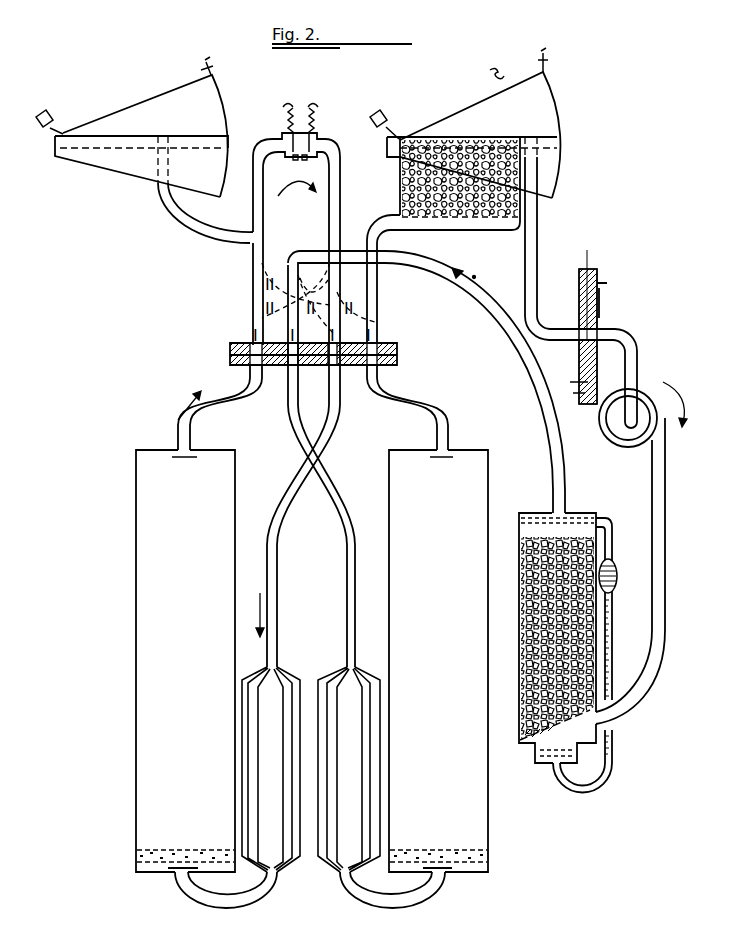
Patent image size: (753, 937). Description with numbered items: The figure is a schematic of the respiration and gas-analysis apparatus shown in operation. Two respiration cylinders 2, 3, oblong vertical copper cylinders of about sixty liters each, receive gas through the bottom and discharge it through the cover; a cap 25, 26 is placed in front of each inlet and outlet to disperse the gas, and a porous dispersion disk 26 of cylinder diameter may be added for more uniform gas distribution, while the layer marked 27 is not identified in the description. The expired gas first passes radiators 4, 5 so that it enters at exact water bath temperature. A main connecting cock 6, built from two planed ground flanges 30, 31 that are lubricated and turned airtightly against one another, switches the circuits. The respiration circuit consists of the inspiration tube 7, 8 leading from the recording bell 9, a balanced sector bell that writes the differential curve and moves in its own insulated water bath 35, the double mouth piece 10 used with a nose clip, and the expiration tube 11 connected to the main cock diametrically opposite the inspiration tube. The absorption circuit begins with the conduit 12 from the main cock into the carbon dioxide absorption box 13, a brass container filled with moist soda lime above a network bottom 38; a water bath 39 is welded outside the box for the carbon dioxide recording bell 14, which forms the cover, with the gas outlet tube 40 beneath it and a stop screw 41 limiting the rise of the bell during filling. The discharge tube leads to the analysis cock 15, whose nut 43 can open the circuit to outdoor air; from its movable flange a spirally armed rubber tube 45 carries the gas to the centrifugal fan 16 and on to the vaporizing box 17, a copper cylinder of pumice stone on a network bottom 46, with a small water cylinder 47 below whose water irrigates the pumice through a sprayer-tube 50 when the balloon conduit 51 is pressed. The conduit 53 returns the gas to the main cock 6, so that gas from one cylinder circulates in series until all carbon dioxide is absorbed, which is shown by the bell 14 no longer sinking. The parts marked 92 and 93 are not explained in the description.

The respiration cylinder 2 is at (185, 661).
The respiration cylinder 3 is at (438, 661).
The radiator 4 is at (300, 680).
The radiator 5 is at (328, 868).
The main connecting cock 6 is at (399, 353).
The inspiration tube 7 is at (258, 215).
The inspiration tube 8 is at (222, 238).
The recording bell 9 is at (132, 136).
The double mouth piece 10 is at (297, 107).
The expiration tube 11 is at (333, 229).
The absorption circuit conduit 12 is at (375, 284).
The carbon dioxide absorption box 13 is at (400, 182).
The carbon dioxide recording bell 14 is at (465, 135).
The analysis cock 15 is at (584, 319).
The centrifugal fan 16 is at (613, 440).
The vaporizing box 17 is at (519, 597).
The gas dispersion cap 25 is at (188, 860).
The gas dispersion cap 26 is at (178, 460).
The sediment layer 27 is at (148, 854).
The ground flange 30 is at (403, 343).
The ground flange 31 is at (400, 366).
The insulated water bath 35 is at (141, 166).
The network bottom 38 is at (455, 220).
The water bath 39 is at (548, 165).
The gas outlet tube 40 is at (538, 227).
The stop screw 41 is at (488, 77).
The nut 43 is at (600, 300).
The spirally armed rubber tube 45 is at (632, 368).
The network bottom 46 is at (553, 717).
The water cylinder 47 is at (538, 757).
The sprayer-tube 50 is at (553, 513).
The balloon conduit 51 is at (612, 620).
The conduit 53 is at (541, 397).
The pivot 92 is at (214, 63).
The pivot 93 is at (548, 58).